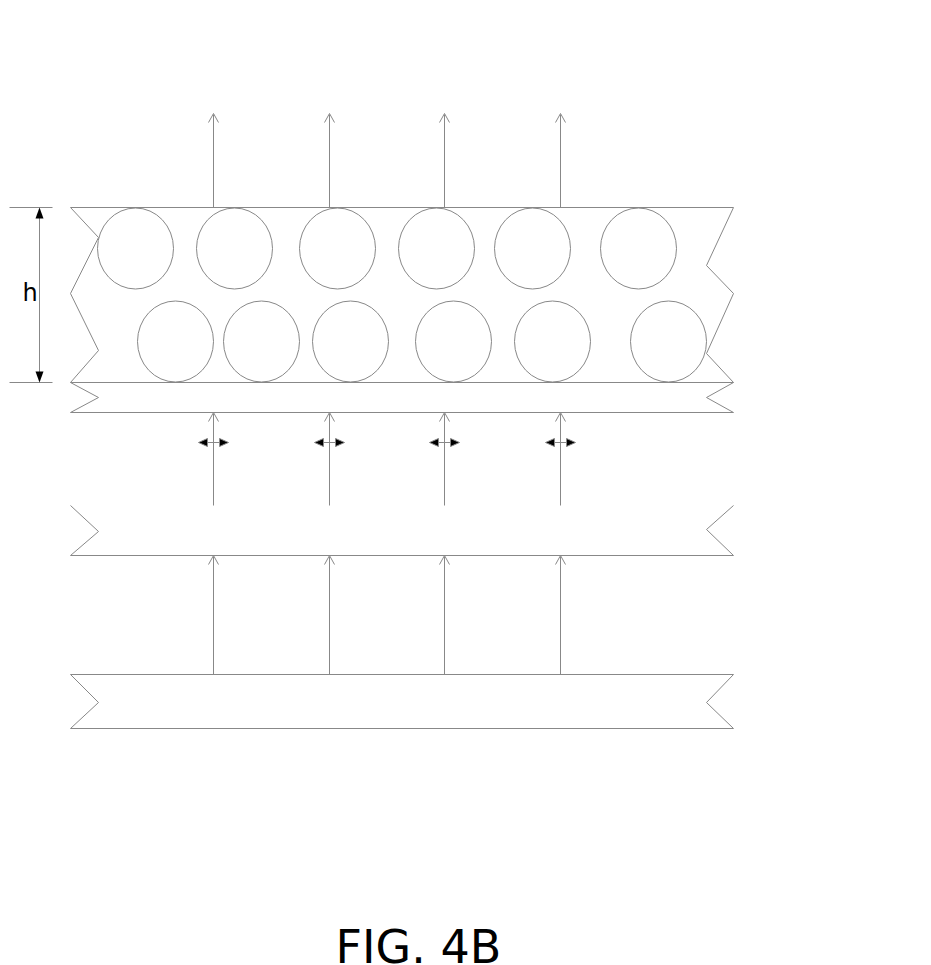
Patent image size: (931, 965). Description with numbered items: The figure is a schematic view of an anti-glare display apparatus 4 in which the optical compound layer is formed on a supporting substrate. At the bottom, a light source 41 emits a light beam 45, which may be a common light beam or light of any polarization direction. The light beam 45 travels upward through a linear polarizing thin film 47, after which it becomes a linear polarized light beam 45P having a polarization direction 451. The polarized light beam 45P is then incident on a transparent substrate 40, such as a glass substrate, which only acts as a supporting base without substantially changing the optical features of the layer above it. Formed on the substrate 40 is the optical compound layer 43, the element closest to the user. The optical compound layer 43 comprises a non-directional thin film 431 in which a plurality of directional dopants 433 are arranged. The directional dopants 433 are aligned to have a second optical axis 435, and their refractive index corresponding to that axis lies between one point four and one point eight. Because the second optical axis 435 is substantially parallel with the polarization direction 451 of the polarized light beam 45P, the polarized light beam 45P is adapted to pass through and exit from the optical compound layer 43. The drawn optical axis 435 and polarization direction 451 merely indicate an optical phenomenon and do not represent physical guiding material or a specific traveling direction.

The display apparatus 4 is at (518, 68).
The optical compound layer 43 is at (95, 198).
The thin film 431 is at (698, 230).
The directional dopants 433 is at (638, 213).
The second optical axis 435 is at (114, 251).
The substrate 40 is at (720, 410).
The light beam 45 is at (208, 168).
The polarized light beam 45P is at (208, 464).
The polarization direction 451 is at (206, 442).
The linear polarizing thin film 47 is at (698, 517).
The light source 41 is at (698, 683).